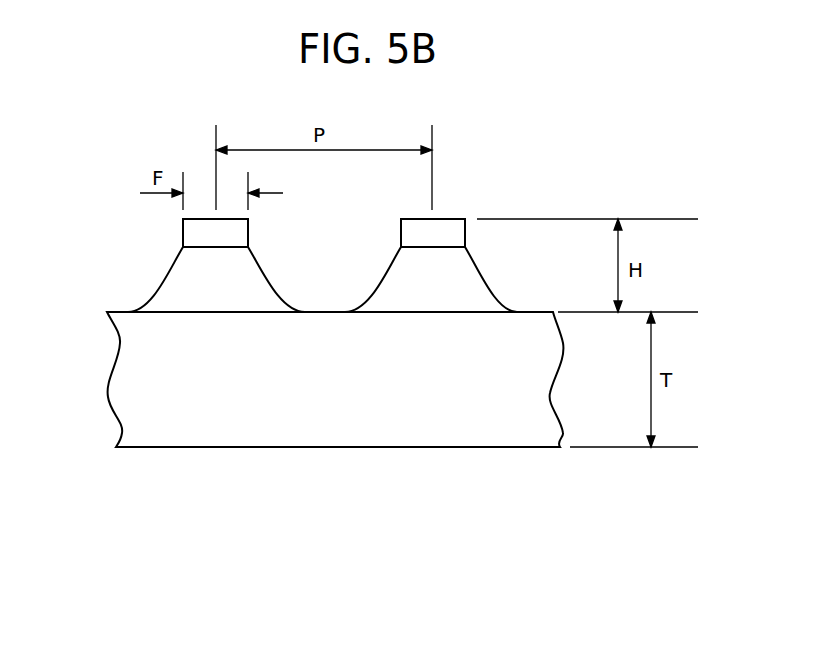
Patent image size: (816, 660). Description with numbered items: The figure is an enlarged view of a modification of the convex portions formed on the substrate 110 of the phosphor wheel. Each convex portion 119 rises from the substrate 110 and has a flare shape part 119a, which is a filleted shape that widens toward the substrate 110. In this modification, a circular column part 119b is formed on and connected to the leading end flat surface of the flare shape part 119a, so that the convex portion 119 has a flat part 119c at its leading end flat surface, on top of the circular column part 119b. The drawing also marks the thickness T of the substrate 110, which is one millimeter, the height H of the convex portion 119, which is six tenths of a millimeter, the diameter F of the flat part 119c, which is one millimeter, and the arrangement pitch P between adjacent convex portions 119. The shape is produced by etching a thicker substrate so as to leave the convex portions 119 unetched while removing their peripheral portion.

The substrate 110 is at (235, 421).
The convex portion 119 is at (270, 277).
The flare shape part 119a is at (183, 295).
The circular column part 119b is at (198, 237).
The flat part 119c is at (448, 219).